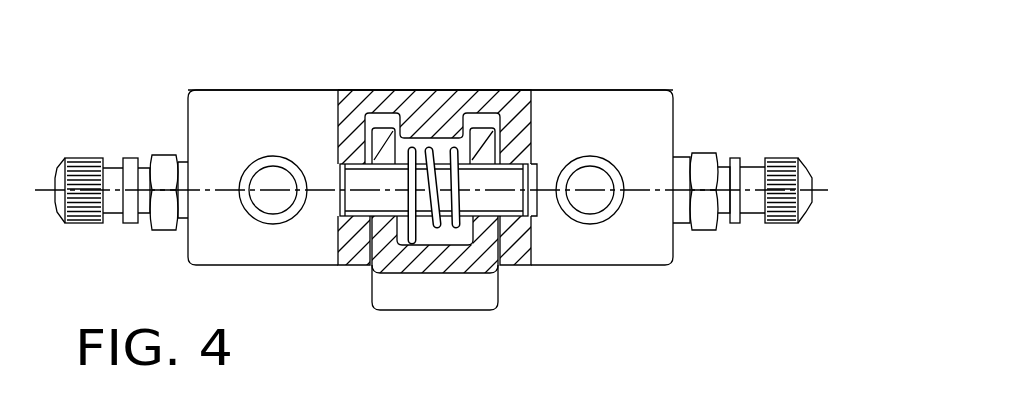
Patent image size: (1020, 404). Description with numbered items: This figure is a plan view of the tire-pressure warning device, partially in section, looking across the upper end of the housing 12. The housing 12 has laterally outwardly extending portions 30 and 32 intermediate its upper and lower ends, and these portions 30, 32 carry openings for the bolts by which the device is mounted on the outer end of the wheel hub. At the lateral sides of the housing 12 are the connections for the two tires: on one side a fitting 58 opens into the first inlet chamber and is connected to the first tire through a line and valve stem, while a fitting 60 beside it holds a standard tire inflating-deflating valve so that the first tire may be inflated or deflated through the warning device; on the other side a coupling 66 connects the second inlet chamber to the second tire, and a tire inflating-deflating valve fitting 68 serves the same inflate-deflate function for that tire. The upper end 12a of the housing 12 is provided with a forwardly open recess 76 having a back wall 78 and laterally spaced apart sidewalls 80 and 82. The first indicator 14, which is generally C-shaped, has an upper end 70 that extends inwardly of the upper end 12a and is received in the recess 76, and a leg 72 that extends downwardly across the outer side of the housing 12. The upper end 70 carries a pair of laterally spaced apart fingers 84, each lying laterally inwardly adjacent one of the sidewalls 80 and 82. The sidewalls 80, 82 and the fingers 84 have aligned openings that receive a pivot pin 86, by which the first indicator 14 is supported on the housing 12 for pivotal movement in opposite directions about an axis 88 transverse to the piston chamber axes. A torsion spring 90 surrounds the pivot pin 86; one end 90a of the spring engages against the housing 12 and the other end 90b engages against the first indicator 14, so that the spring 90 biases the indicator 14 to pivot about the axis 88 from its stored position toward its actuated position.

The housing 12 is at (575, 74).
The upper end of housing 12a is at (355, 84).
The first indicator 14 is at (434, 322).
The laterally outwardly extending portion 30 is at (645, 244).
The laterally outwardly extending portion 32 is at (268, 267).
The fitting 58 is at (616, 163).
The fitting 60 is at (735, 160).
The coupling 66 is at (273, 157).
The tire inflating-deflating valve fitting 68 is at (163, 166).
The upper end of first indicator 70 is at (480, 115).
The leg 72 is at (453, 300).
The recess 76 is at (468, 262).
The back wall 78 is at (420, 98).
The sidewall 80 is at (533, 248).
The sidewall 82 is at (366, 243).
The fingers 84 is at (374, 263).
The pivot pin 86 is at (537, 188).
The axis 88 is at (540, 183).
The torsion spring 90 is at (434, 195).
The end of torsion spring 90a is at (451, 140).
The end of torsion spring 90b is at (410, 247).